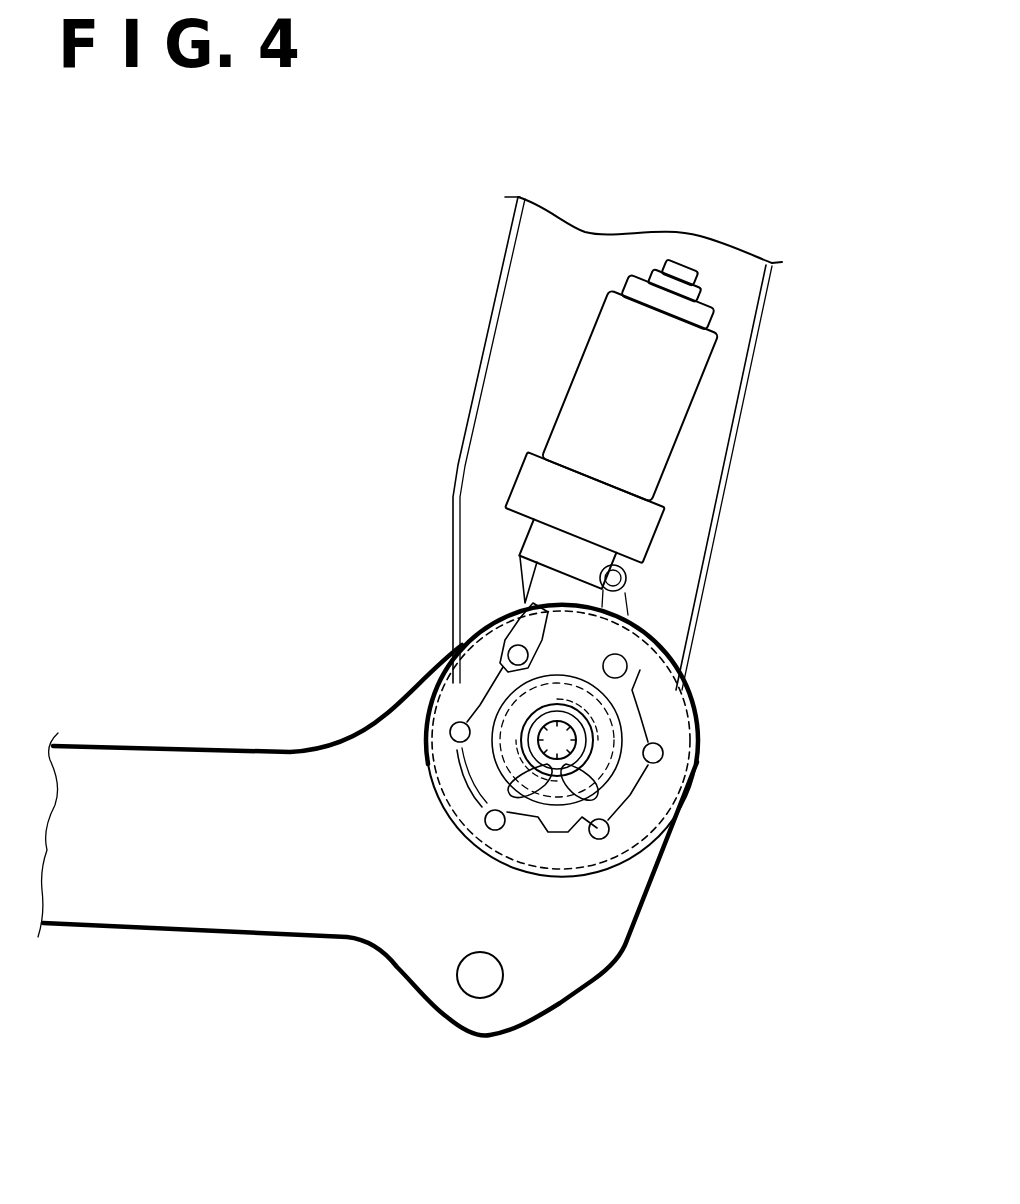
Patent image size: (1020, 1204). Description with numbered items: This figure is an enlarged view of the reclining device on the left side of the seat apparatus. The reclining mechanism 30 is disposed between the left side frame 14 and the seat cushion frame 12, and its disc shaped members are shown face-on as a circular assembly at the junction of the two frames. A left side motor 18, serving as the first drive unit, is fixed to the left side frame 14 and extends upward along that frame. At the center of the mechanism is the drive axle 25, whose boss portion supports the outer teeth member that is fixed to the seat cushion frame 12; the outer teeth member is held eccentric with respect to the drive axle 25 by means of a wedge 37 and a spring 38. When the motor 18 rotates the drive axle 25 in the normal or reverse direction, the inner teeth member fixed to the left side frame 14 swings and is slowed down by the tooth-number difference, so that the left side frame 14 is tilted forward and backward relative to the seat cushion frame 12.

The seat cushion frame 12 is at (160, 917).
The left side frame 14 is at (493, 307).
The left side motor 18 is at (588, 422).
The drive axle 25 is at (577, 757).
The reclining mechanism 30 is at (767, 678).
The wedge 37 is at (593, 742).
The spring 38 is at (602, 803).